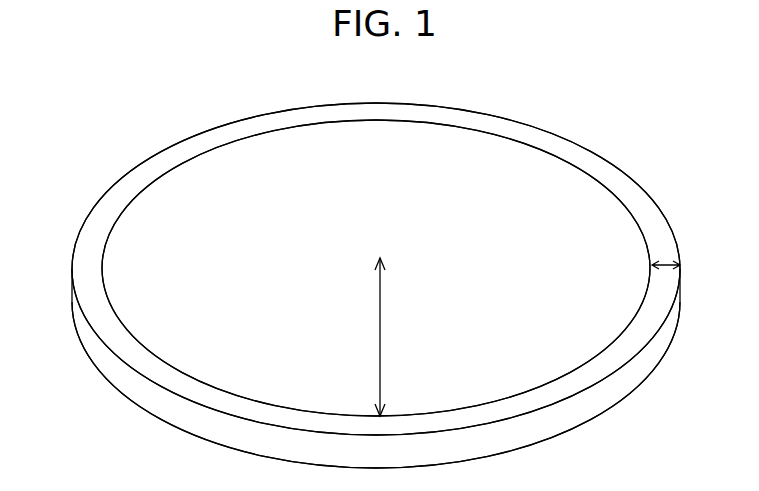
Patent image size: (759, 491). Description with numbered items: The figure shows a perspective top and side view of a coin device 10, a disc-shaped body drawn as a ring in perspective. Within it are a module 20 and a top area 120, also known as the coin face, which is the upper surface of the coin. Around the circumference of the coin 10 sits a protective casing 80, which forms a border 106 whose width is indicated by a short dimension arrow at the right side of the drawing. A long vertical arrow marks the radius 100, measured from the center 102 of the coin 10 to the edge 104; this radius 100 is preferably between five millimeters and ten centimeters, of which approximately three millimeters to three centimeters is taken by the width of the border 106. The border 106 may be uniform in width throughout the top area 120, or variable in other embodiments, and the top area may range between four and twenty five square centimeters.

The coin device 10 is at (162, 129).
The module 20 is at (439, 170).
The top area 120 is at (522, 129).
The protective casing 80 is at (646, 363).
The border 106 is at (666, 262).
The radius 100 is at (380, 338).
The center 102 is at (382, 259).
The edge 104 is at (387, 410).